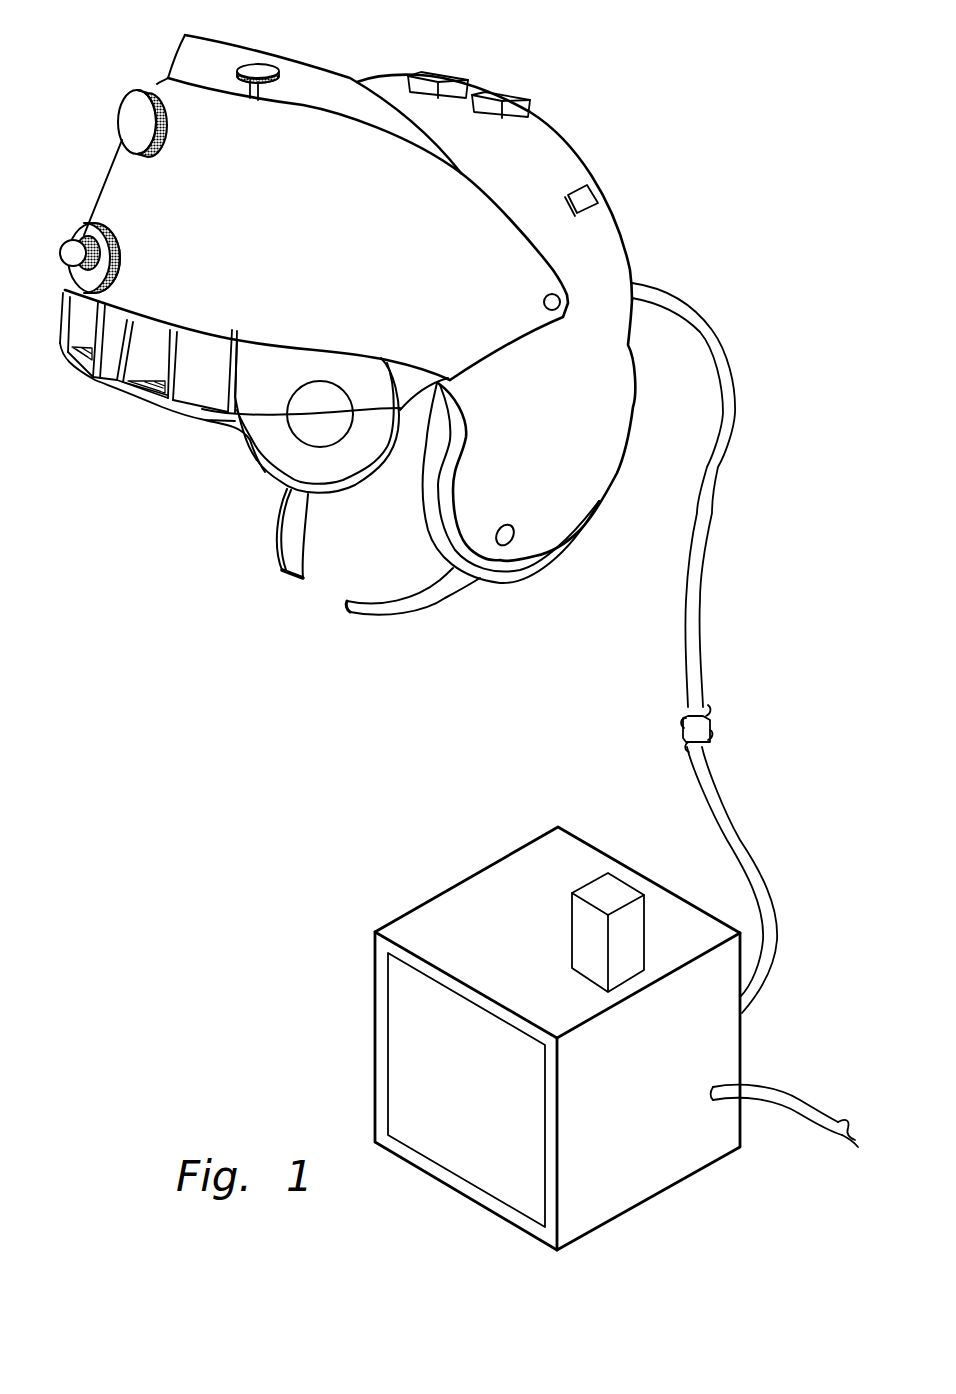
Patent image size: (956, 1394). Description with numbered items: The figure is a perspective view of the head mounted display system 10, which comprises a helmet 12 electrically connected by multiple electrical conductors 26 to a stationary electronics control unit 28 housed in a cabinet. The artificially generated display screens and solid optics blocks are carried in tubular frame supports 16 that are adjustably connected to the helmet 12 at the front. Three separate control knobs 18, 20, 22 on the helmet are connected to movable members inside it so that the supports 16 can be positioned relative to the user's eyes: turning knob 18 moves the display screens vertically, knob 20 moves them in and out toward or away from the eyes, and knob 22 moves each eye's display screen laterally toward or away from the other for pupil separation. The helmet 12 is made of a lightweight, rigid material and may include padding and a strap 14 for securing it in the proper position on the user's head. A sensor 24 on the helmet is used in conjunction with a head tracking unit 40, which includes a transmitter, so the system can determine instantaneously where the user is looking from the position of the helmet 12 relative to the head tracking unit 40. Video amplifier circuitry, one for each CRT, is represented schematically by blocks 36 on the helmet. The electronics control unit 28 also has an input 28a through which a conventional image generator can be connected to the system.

The head mounted display system 10 is at (202, 563).
The helmet 12 is at (533, 162).
The strap 14 is at (280, 563).
The tubular frame supports 16 is at (108, 360).
The control knob 18 is at (262, 70).
The control knob 20 is at (138, 116).
The control knob 22 is at (68, 253).
The sensor 24 is at (588, 193).
The electrical conductors 26 is at (720, 480).
The electronics control unit 28 is at (482, 933).
The input 28a is at (773, 1090).
The video amplifier circuitry blocks 36 is at (440, 80).
The head tracking unit 40 is at (618, 893).